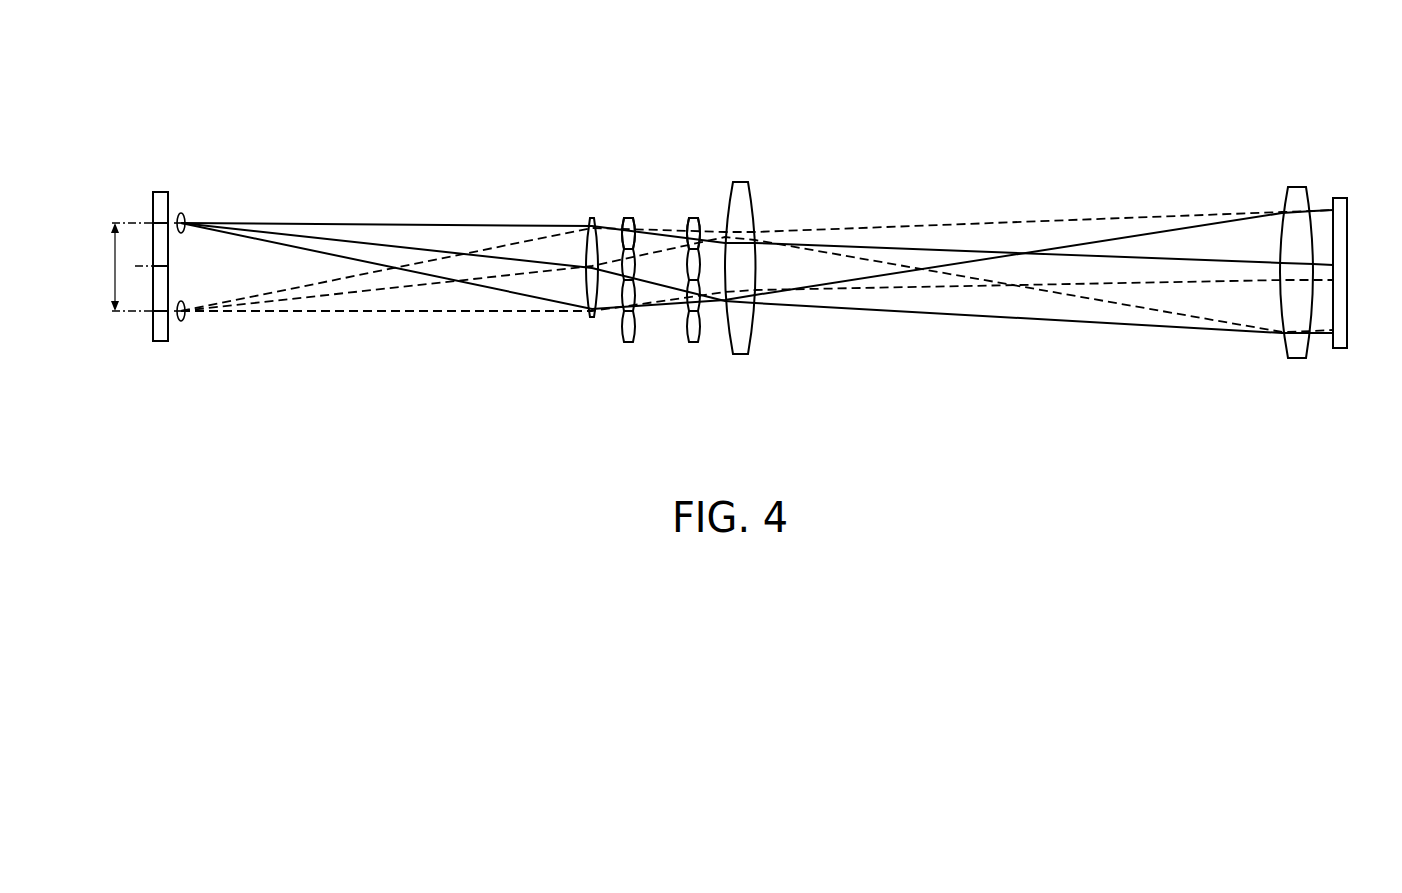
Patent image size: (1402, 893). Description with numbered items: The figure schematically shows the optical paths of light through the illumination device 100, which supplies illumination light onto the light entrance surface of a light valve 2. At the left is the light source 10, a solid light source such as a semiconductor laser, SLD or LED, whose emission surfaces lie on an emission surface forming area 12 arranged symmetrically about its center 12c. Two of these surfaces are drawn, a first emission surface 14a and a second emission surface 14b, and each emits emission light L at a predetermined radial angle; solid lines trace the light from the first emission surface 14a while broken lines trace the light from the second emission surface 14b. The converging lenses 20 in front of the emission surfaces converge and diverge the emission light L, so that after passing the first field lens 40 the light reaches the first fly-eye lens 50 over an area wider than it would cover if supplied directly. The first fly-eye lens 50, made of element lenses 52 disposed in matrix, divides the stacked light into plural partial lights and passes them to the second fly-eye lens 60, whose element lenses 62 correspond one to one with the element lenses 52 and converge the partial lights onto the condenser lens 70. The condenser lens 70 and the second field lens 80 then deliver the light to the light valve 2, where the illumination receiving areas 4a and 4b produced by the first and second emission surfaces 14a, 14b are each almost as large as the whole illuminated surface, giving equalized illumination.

The illumination device 100 is at (1315, 63).
The light source 10 is at (160, 196).
The emission surface forming area 12 is at (104, 267).
The center of emission surface forming area 12c is at (137, 270).
The first emission surface 14a is at (153, 223).
The second emission surface 14b is at (164, 320).
The converging lens 20 is at (181, 212).
The emission light L is at (177, 346).
The first field lens 40 is at (592, 216).
The first fly-eye lens 50 is at (628, 216).
The element lens 52 is at (633, 220).
The second fly-eye lens 60 is at (694, 216).
The element lens 62 is at (699, 219).
The condenser lens 70 is at (748, 202).
The second field lens 80 is at (1297, 187).
The light valve 2 is at (1338, 198).
The illumination receiving area 4a is at (1332, 227).
The illumination receiving area 4b is at (1331, 318).